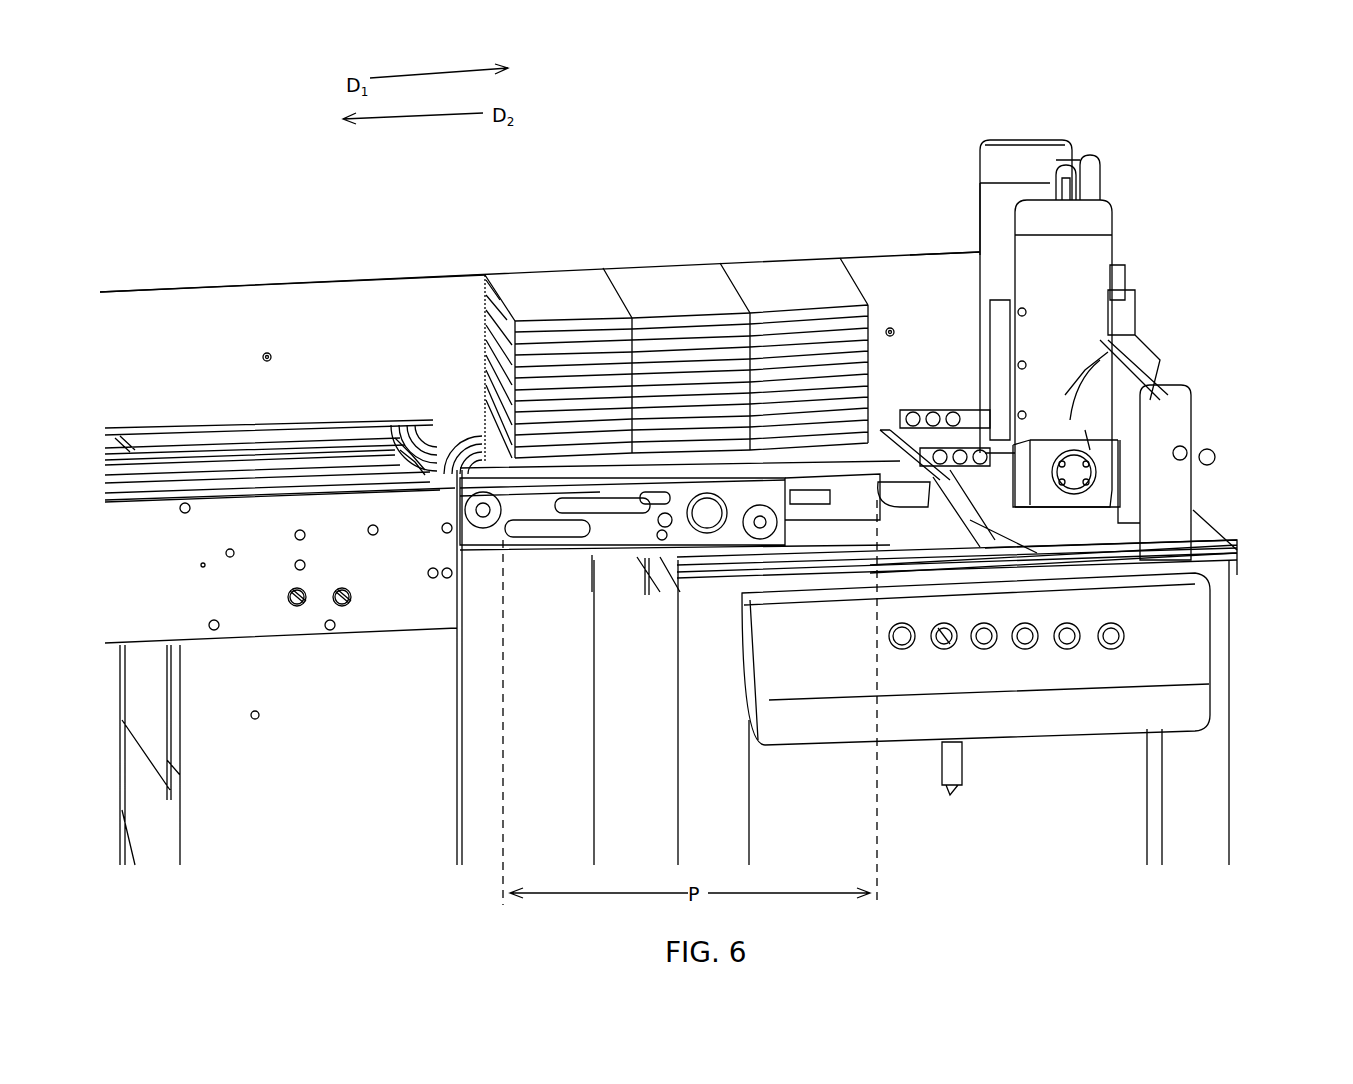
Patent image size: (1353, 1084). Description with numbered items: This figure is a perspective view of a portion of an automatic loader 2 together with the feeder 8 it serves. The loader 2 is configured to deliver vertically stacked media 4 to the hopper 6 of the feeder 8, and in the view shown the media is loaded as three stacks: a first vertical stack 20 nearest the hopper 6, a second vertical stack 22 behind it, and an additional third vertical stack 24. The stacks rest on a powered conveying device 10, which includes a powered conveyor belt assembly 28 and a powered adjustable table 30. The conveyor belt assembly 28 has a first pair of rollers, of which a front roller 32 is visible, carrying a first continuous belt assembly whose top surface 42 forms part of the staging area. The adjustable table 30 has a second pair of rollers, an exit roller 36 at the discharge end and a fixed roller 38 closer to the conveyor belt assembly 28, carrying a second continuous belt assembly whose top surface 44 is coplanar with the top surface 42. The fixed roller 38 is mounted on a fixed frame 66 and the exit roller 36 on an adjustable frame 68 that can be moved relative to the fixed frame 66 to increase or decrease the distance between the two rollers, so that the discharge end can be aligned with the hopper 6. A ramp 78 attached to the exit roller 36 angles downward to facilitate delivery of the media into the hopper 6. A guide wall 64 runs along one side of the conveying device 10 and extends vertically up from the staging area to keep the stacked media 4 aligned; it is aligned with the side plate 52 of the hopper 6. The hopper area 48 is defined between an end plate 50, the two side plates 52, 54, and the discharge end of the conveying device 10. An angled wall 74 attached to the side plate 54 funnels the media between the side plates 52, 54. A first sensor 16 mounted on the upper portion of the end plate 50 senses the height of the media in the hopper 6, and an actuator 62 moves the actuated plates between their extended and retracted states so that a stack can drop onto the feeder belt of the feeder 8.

The automatic loader 2 is at (1213, 90).
The vertically stacked media 4 is at (727, 158).
The hopper 6 is at (899, 174).
The feeder 8 is at (1140, 677).
The powered conveying device 10 is at (250, 211).
The first sensor 16 is at (1071, 164).
The first vertical stack 20 is at (776, 270).
The second vertical stack 22 is at (675, 290).
The third vertical stack 24 is at (572, 300).
The powered conveyor belt assembly 28 is at (148, 540).
The powered adjustable table 30 is at (610, 478).
The front roller 32 is at (385, 432).
The exit roller 36 is at (890, 440).
The fixed roller 38 is at (432, 424).
The top surface of first continuous belt assembly 42 is at (200, 431).
The top surface of second continuous belt assembly 44 is at (476, 423).
The hopper area 48 is at (1002, 187).
The end plate 50 is at (1095, 175).
The side plate 52 is at (1045, 150).
The side plate 54 is at (1080, 258).
The actuator 62 is at (1080, 476).
The guide wall 64 is at (378, 314).
The fixed frame 66 is at (545, 548).
The adjustable frame 68 is at (835, 520).
The angled wall 74 is at (1003, 362).
The ramp 78 is at (929, 520).